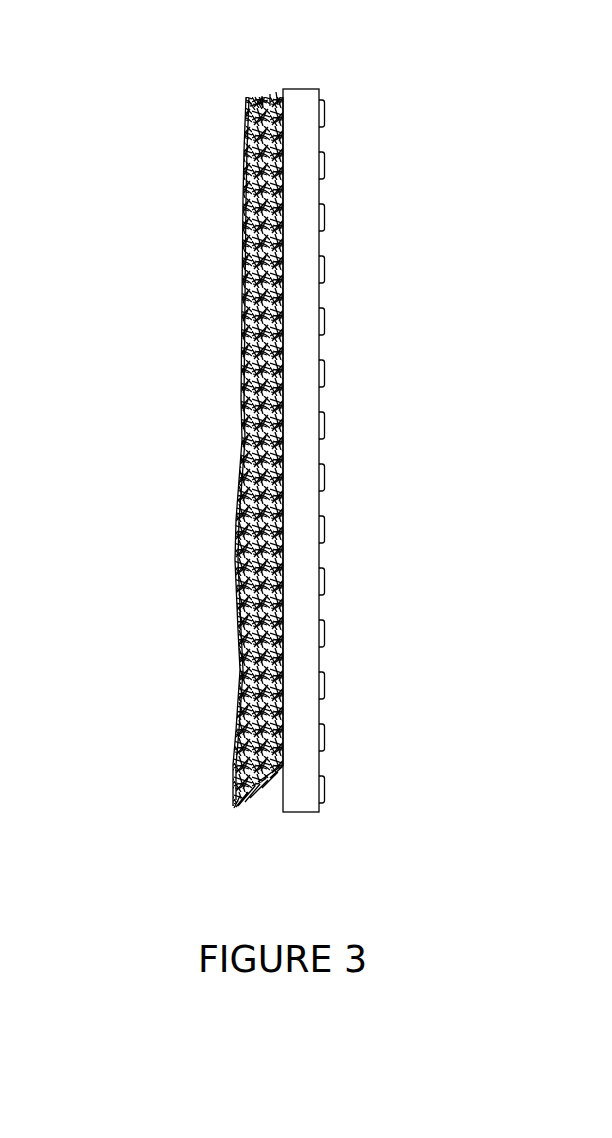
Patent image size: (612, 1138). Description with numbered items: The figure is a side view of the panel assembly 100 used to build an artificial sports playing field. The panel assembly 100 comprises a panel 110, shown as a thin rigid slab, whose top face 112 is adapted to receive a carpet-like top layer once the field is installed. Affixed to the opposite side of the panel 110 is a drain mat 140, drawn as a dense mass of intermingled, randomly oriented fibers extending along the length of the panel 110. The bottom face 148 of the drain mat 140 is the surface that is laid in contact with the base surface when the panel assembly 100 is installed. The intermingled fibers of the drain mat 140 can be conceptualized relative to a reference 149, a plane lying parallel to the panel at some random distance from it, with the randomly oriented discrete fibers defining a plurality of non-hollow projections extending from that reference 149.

The panel assembly 100 is at (138, 45).
The panel 110 is at (302, 775).
The top face 112 is at (325, 427).
The drain mat 140 is at (244, 808).
The bottom face of the drain mat 148 is at (244, 127).
The reference plane 149 is at (242, 449).